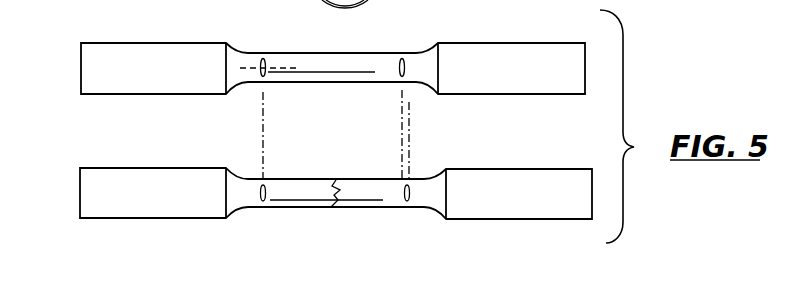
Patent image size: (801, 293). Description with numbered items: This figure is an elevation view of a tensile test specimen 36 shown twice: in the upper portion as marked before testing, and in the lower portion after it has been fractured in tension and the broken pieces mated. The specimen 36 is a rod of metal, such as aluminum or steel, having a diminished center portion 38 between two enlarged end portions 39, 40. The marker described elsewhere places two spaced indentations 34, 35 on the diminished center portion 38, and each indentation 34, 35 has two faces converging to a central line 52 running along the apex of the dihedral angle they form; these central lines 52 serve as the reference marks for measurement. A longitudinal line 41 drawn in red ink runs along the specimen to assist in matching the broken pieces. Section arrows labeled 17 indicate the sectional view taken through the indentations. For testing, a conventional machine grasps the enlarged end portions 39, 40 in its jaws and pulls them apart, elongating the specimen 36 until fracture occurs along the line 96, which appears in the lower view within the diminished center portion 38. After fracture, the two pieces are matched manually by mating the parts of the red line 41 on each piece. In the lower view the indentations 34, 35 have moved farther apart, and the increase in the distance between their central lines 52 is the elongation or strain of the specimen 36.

The section line 17 is at (251, 66).
The indentation 34 is at (262, 82).
The indentation 35 is at (401, 57).
The specimen 36 is at (449, 33).
The diminished center portion 38 is at (338, 53).
The enlarged end portion 39 is at (148, 50).
The enlarged end portion 40 is at (520, 56).
The longitudinal line 41 is at (300, 73).
The central line 52 is at (261, 124).
The line of fracture 96 is at (341, 182).